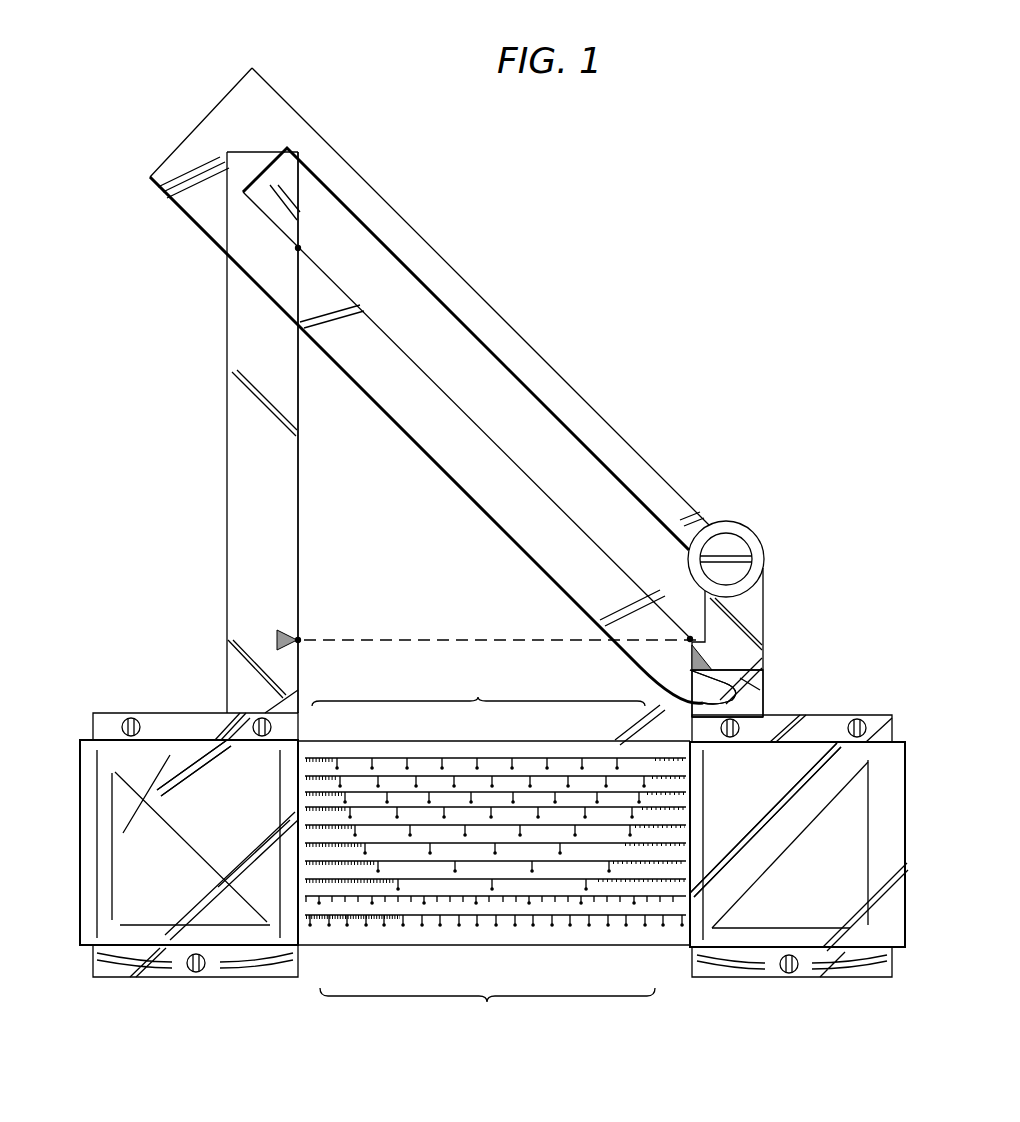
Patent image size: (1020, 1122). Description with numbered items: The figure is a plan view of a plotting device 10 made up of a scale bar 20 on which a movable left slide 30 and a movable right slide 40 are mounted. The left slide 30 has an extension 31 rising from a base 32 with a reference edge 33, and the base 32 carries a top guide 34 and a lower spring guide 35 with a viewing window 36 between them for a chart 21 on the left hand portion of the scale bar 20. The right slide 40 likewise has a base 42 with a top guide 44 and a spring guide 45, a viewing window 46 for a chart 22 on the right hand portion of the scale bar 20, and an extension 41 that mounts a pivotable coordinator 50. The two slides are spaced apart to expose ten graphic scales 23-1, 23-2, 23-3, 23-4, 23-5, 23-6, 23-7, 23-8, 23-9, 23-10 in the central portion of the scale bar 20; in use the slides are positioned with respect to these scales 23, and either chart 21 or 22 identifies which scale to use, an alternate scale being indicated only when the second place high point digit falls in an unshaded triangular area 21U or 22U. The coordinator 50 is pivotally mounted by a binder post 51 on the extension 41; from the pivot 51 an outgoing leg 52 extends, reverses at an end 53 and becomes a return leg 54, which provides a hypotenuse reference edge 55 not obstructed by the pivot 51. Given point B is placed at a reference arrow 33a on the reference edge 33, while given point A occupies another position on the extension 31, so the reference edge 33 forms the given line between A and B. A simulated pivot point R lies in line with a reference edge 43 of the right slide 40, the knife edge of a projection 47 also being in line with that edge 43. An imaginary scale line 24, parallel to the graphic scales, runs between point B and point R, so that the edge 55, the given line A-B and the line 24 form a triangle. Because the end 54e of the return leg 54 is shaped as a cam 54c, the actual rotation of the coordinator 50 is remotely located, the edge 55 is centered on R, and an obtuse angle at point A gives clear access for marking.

The plotting device 10 is at (542, 230).
The scale bar 20 is at (494, 875).
The chart 21 is at (140, 887).
The unshaded triangular area 21U is at (165, 757).
The chart 22 is at (825, 890).
The unshaded triangular area 22U is at (810, 752).
The scales 23 is at (483, 851).
The graphic scale 23-1 is at (328, 917).
The graphic scale 23-2 is at (442, 898).
The graphic scale 23-3 is at (505, 880).
The graphic scale 23-4 is at (548, 863).
The graphic scale 23-5 is at (597, 845).
The graphic scale 23-6 is at (367, 825).
The graphic scale 23-7 is at (405, 807).
The graphic scale 23-8 is at (467, 788).
The graphic scale 23-9 is at (527, 773).
The graphic scale 23-10 is at (582, 758).
The imaginary scale line 24 is at (408, 640).
The left slide 30 is at (164, 833).
The extension 31 is at (227, 540).
The base 32 is at (90, 843).
The reference edge 33 is at (302, 565).
The reference arrow 33a is at (292, 635).
The top guide 34 is at (92, 713).
The spring guide 35 is at (135, 977).
The viewing window 36 is at (100, 757).
The right slide 40 is at (777, 801).
The extension 41 is at (765, 600).
The base 42 is at (894, 848).
The reference edge 43 is at (690, 712).
The top guide 44 is at (892, 716).
The spring guide 45 is at (770, 978).
The viewing window 46 is at (882, 757).
The projection 47 is at (710, 717).
The coordinator 50 is at (473, 397).
The binder post 51 is at (740, 540).
The outgoing leg 52 is at (660, 472).
The end 53 is at (193, 142).
The return leg 54 is at (472, 498).
The cam 54c is at (700, 700).
The end 54e is at (724, 645).
The hypotenuse reference edge 55 is at (512, 460).
The given point A is at (300, 248).
The given point B is at (300, 638).
The simulated pivot point R is at (690, 636).